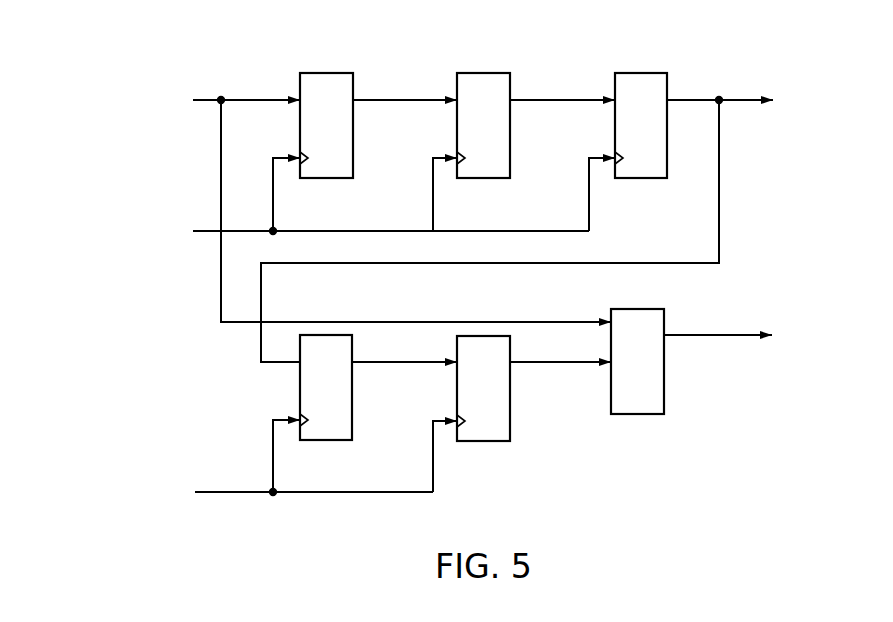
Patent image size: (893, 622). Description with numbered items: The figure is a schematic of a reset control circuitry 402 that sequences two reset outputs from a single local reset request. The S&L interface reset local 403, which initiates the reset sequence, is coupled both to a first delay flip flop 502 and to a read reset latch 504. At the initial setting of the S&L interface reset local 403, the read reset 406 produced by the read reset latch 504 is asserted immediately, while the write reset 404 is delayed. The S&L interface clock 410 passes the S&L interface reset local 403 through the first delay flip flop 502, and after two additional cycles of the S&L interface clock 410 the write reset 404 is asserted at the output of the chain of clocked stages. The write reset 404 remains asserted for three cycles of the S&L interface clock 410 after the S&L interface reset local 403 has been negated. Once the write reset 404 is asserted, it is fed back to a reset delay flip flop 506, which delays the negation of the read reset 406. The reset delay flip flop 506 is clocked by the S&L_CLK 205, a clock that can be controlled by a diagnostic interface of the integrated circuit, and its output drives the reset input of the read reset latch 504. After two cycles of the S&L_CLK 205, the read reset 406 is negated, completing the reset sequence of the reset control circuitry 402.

The reset control circuitry 402 is at (175, 42).
The S&L interface reset local 403 is at (329, 196).
The write reset 404 is at (720, 99).
The read reset 406 is at (718, 337).
The S&L interface clock 410 is at (348, 209).
The S&L_CLK 205 is at (307, 471).
The first delay flip flop 502 is at (345, 147).
The read reset latch 504 is at (658, 402).
The reset delay flip flop 506 is at (345, 404).